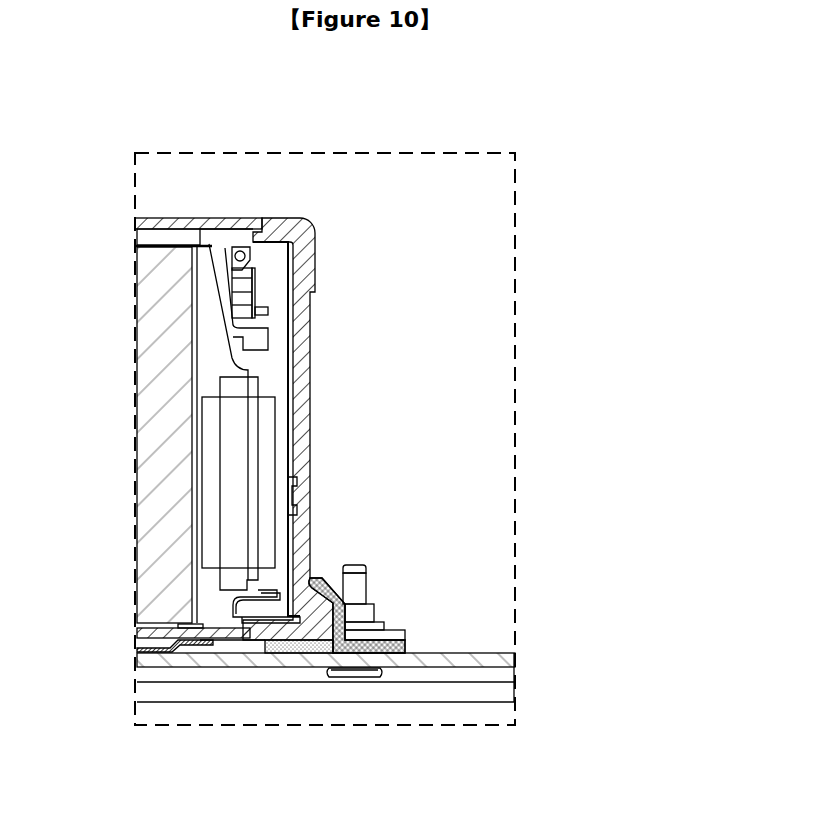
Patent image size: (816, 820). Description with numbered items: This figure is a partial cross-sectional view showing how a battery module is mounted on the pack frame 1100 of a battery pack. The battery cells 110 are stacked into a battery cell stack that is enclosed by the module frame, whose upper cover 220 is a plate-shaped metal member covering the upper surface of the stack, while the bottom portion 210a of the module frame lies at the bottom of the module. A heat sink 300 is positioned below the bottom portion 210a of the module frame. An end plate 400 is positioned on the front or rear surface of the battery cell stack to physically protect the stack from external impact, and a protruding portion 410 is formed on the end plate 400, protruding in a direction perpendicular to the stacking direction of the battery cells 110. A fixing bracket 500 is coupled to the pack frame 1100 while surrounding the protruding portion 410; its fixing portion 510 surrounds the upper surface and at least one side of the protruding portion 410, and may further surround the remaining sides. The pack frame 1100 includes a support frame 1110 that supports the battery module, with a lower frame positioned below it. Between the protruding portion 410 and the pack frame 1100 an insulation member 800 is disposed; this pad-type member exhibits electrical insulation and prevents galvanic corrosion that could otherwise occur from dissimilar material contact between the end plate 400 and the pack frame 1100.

The battery cell 110 is at (152, 313).
The upper cover 220 is at (175, 220).
The end plate 400 is at (301, 326).
The protruding portion 410 is at (313, 580).
The fixing portion 510 is at (330, 585).
The fixing bracket 500 is at (411, 572).
The bottom portion 210a is at (140, 638).
The heat sink 300 is at (138, 651).
The insulation member 800 is at (290, 645).
The support frame 1110 is at (512, 657).
The pack frame 1100 is at (405, 674).